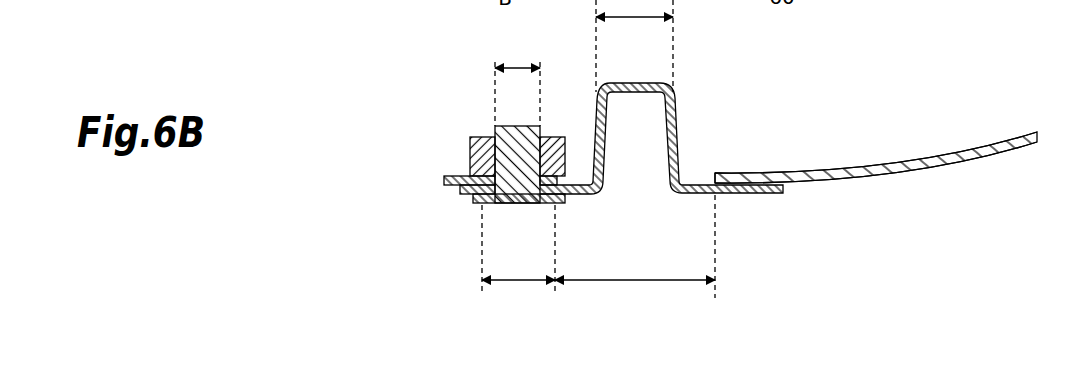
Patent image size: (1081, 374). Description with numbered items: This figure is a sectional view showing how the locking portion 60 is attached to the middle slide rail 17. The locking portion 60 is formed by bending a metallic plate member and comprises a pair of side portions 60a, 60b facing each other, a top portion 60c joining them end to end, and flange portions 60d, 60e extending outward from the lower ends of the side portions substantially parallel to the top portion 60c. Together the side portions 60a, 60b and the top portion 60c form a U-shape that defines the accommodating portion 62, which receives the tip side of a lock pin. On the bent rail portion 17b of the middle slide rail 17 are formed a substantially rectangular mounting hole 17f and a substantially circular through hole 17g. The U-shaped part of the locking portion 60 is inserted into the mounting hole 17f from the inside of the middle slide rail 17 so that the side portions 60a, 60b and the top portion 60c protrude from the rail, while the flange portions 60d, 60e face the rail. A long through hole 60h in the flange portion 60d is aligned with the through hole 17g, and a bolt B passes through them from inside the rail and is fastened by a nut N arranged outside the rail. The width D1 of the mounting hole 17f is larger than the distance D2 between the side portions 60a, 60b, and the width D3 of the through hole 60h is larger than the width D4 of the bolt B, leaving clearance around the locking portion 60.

The middle slide rail 17 is at (954, 155).
The bent rail portion 17b is at (857, 173).
The mounting hole 17f is at (706, 173).
The through hole 17g is at (507, 168).
The locking portion 60 is at (684, 89).
The side portion 60a is at (593, 127).
The side portion 60b is at (677, 133).
The top portion 60c is at (623, 83).
The flange portion 60d is at (462, 188).
The flange portion 60e is at (750, 189).
The through hole 60h is at (490, 198).
The accommodating portion 62 is at (629, 153).
The bolt B is at (514, 196).
The nut N is at (483, 143).
The width of the mounting hole D1 is at (635, 251).
The distance between the side portions D2 is at (634, 46).
The width of the through hole D3 is at (518, 256).
The width of the bolt D4 is at (517, 83).